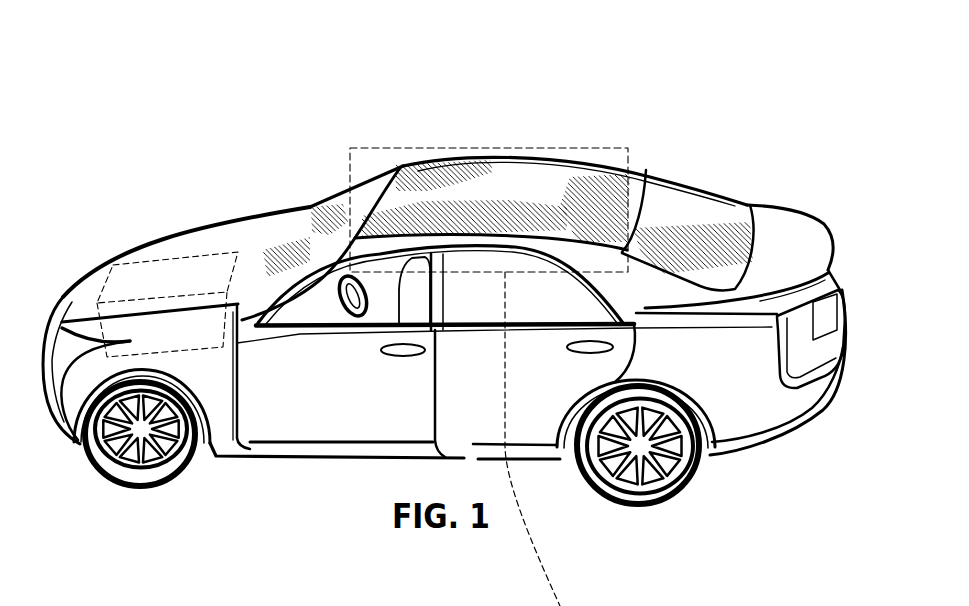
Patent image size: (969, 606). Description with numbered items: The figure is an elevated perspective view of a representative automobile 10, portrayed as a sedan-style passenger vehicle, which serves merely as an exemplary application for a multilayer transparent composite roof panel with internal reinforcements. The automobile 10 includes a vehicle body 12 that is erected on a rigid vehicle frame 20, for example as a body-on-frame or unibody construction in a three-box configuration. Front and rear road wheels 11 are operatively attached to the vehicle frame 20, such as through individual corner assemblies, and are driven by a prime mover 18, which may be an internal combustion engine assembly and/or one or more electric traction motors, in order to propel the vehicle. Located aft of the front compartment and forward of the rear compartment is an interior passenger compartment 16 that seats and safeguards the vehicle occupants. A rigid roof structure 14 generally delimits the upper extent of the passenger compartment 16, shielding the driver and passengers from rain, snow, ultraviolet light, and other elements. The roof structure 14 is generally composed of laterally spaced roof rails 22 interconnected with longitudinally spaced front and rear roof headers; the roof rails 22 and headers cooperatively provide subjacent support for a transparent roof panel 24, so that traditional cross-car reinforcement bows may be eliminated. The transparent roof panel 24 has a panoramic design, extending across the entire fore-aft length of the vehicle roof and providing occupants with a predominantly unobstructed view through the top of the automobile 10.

The automobile 10 is at (133, 90).
The road wheels 11 is at (123, 486).
The vehicle body 12 is at (143, 240).
The roof structure 14 is at (405, 168).
The interior passenger compartment 16 is at (314, 205).
The prime mover 18 is at (103, 292).
The vehicle frame 20 is at (307, 272).
The roof rails 22 is at (515, 158).
The transparent roof panel 24 is at (540, 175).